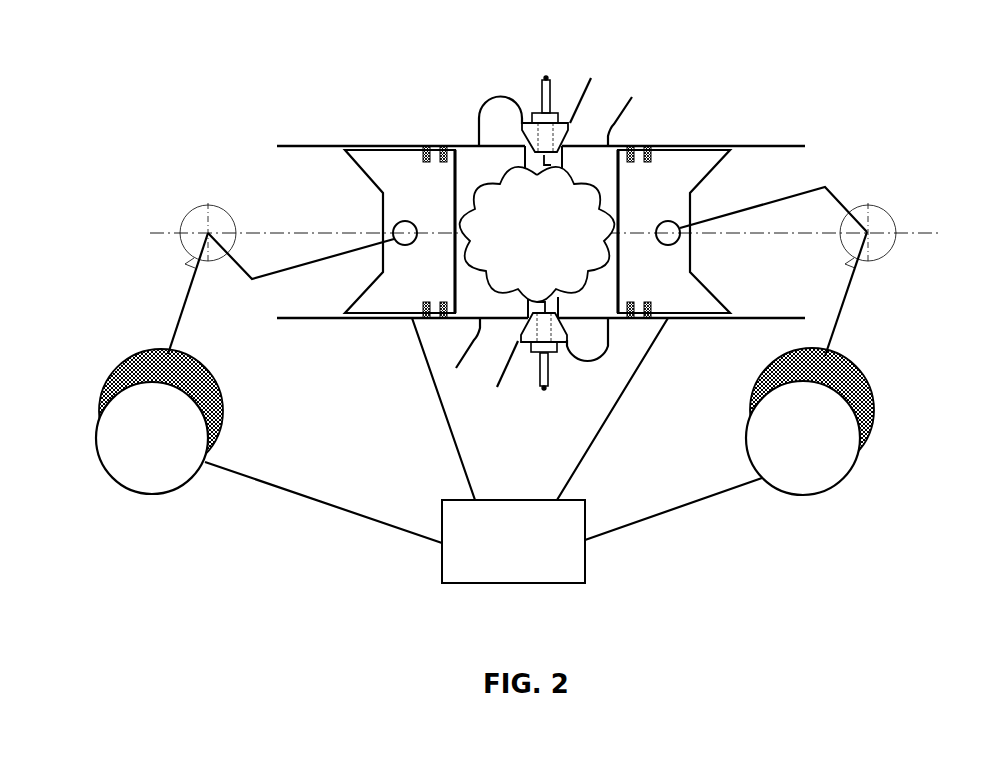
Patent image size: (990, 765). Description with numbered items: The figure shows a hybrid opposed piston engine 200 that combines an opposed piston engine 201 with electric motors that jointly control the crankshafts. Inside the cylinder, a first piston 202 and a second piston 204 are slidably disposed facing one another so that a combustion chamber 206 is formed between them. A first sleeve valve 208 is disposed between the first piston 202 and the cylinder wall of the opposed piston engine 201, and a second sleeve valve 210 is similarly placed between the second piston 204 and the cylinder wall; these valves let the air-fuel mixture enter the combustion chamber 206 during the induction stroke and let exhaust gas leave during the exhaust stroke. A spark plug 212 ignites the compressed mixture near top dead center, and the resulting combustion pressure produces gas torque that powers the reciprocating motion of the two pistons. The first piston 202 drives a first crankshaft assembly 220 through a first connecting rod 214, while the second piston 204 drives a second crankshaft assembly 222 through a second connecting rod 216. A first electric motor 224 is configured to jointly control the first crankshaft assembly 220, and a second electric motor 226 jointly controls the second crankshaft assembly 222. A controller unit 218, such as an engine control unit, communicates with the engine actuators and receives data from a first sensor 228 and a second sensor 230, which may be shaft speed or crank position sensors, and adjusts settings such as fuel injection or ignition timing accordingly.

The hybrid opposed piston engine 200 is at (81, 66).
The opposed piston engine 201 is at (317, 168).
The first piston 202 is at (399, 212).
The second piston 204 is at (637, 212).
The combustion chamber 206 is at (511, 310).
The first sleeve valve 208 is at (424, 150).
The second sleeve valve 210 is at (643, 146).
The spark plug 212 is at (540, 92).
The first connecting rod 214 is at (310, 262).
The second connecting rod 216 is at (806, 192).
The controller unit 218 is at (492, 554).
The first crankshaft assembly 220 is at (137, 349).
The second crankshaft assembly 222 is at (860, 384).
The first electric motor 224 is at (130, 451).
The second electric motor 226 is at (781, 451).
The first sensor 228 is at (217, 410).
The second sensor 230 is at (863, 427).